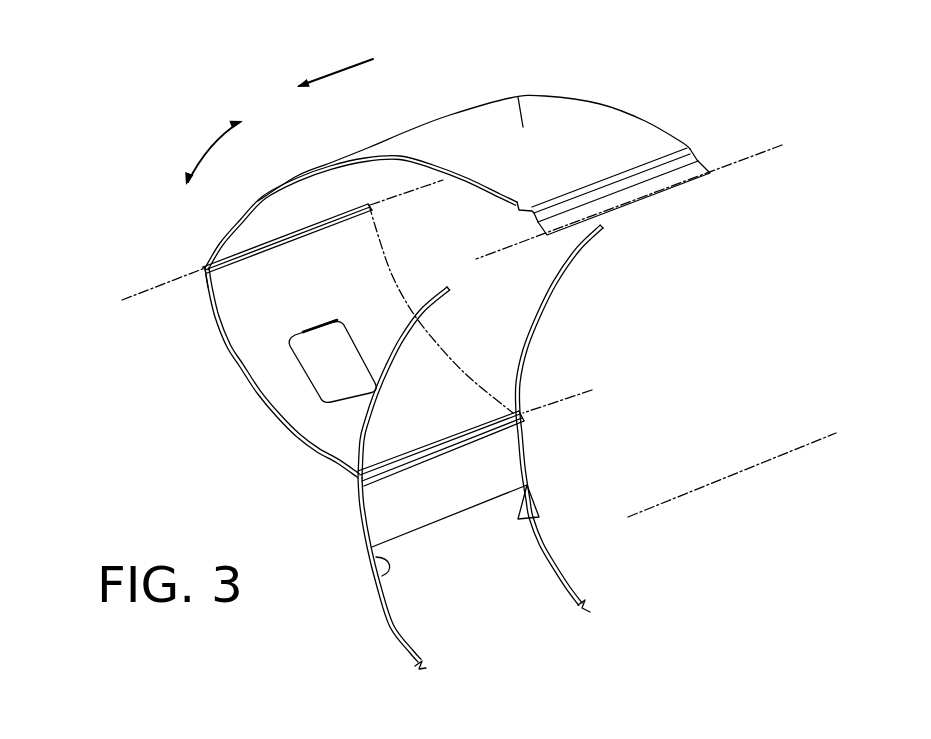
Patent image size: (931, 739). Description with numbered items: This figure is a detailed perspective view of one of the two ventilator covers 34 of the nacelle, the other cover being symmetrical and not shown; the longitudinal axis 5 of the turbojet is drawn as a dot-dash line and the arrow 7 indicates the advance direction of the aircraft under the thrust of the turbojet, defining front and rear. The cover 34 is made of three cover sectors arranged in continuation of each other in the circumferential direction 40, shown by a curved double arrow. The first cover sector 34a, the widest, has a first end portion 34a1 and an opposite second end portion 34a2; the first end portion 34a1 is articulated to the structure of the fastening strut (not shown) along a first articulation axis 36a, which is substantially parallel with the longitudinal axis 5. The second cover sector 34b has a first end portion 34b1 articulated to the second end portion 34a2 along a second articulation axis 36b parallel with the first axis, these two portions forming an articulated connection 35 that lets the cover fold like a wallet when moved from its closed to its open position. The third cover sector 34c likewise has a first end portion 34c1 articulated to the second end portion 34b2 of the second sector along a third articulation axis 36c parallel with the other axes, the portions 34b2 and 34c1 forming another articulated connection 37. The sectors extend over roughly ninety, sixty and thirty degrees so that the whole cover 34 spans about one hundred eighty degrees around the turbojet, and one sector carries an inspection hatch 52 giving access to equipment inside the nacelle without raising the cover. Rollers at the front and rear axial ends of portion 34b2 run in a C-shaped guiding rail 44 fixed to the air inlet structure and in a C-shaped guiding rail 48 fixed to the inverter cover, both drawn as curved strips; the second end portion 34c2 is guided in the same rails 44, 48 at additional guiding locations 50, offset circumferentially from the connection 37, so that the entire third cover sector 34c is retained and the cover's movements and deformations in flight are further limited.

The longitudinal axis 5 is at (708, 488).
The arrow 7 is at (343, 68).
The ventilator cover 34 is at (720, 123).
The first cover sector 34a is at (518, 97).
The first end portion of the first cover sector 34a1 is at (637, 187).
The second end portion of the first cover sector 34a2 is at (220, 240).
The second cover sector 34b is at (260, 362).
The first end portion of the second cover sector 34b1 is at (233, 275).
The second end portion of the second cover sector 34b2 is at (353, 463).
The third cover sector 34c is at (381, 510).
The first end portion of the third cover sector 34c1 is at (382, 490).
The second end portion of the third cover sector 34c2 is at (367, 544).
The articulated connection 35 is at (187, 252).
The first articulation axis 36a is at (782, 145).
The second articulation axis 36b is at (132, 297).
The third articulation axis 36c is at (577, 397).
The articulated connection 37 is at (543, 432).
The circumferential direction 40 is at (195, 140).
The C-shaped guiding rail 44 is at (410, 660).
The C-shaped guiding rail 48 is at (583, 608).
The additional guiding locations 50 is at (537, 510).
The inspection hatch 52 is at (335, 352).